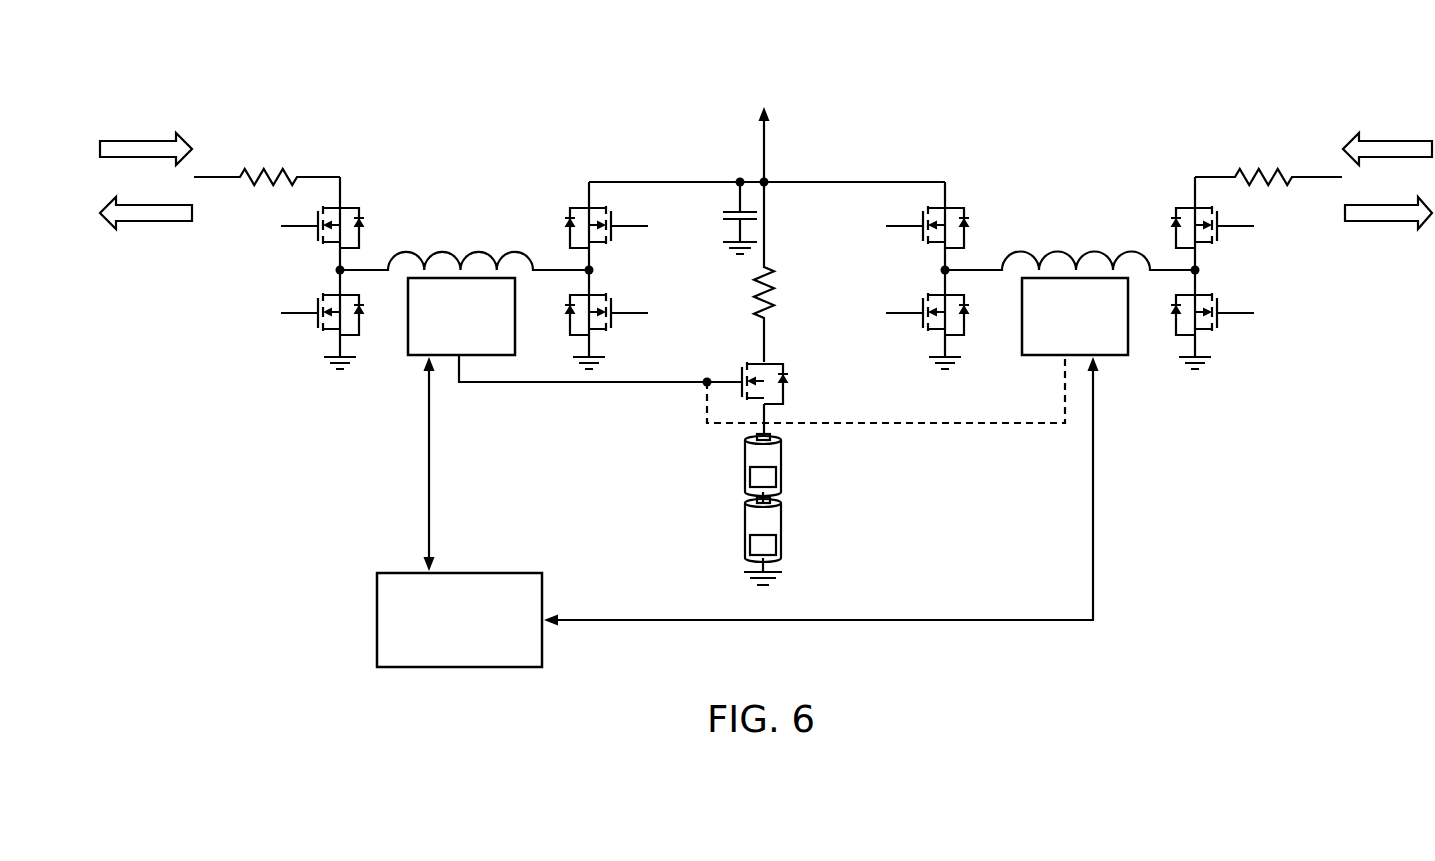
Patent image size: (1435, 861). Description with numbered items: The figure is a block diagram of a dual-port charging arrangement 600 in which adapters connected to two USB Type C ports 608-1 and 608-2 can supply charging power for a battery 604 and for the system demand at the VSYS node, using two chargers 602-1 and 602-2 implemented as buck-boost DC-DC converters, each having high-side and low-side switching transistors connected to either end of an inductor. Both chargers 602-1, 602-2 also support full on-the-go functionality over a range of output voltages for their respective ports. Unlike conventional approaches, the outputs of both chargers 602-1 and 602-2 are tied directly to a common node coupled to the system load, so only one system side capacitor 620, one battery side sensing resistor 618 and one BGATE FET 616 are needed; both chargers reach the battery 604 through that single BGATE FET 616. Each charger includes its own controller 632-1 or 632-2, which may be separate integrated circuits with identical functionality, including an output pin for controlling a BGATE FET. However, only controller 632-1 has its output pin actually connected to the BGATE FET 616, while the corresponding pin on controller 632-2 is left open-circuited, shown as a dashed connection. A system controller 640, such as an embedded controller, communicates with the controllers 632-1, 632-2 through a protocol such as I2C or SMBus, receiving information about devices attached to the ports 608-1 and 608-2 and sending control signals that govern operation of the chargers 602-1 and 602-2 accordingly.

The dual-input charging system 600 is at (940, 58).
The charger 602-1 is at (470, 207).
The charger 602-2 is at (1090, 207).
The battery 604 is at (727, 507).
The port 608-1 is at (218, 177).
The port 608-2 is at (1320, 177).
The BGATE FET 616 is at (783, 368).
The battery side sensing resistor 618 is at (766, 319).
The system side capacitor 620 is at (702, 212).
The controller 632-1 is at (429, 331).
The controller 632-2 is at (1043, 331).
The system controller 640 is at (377, 625).